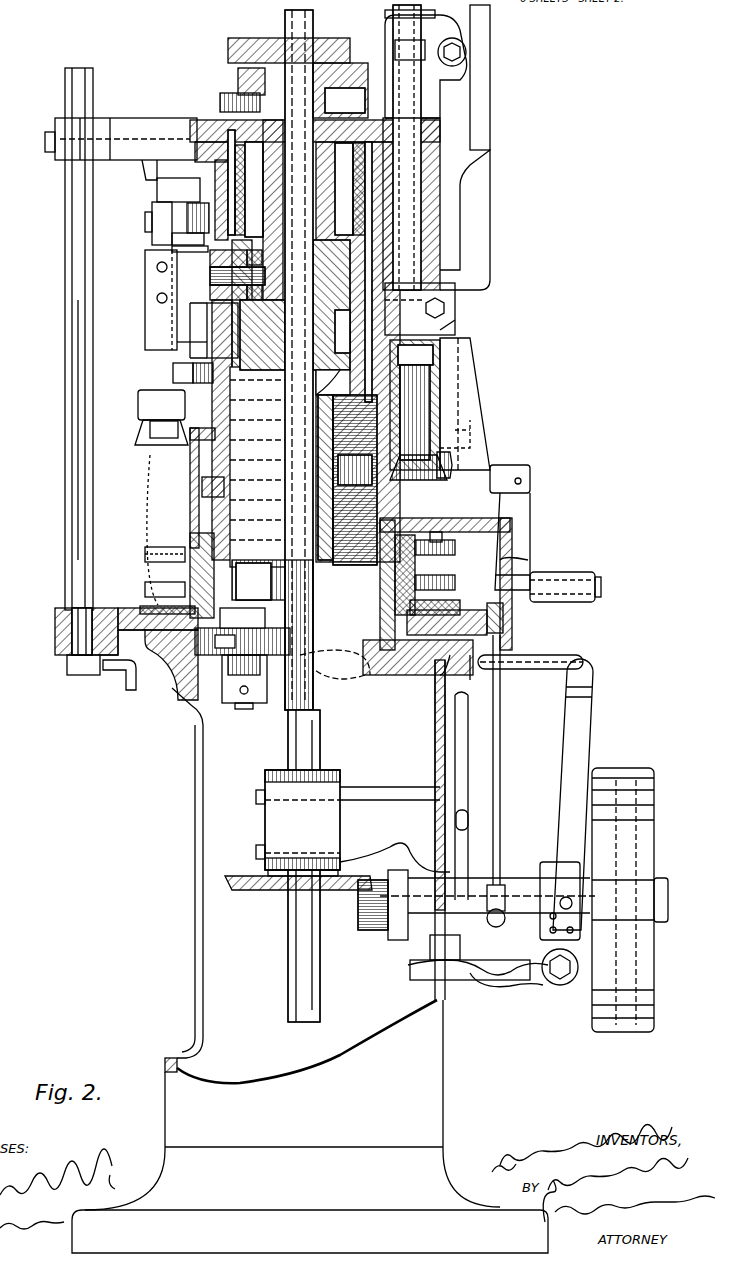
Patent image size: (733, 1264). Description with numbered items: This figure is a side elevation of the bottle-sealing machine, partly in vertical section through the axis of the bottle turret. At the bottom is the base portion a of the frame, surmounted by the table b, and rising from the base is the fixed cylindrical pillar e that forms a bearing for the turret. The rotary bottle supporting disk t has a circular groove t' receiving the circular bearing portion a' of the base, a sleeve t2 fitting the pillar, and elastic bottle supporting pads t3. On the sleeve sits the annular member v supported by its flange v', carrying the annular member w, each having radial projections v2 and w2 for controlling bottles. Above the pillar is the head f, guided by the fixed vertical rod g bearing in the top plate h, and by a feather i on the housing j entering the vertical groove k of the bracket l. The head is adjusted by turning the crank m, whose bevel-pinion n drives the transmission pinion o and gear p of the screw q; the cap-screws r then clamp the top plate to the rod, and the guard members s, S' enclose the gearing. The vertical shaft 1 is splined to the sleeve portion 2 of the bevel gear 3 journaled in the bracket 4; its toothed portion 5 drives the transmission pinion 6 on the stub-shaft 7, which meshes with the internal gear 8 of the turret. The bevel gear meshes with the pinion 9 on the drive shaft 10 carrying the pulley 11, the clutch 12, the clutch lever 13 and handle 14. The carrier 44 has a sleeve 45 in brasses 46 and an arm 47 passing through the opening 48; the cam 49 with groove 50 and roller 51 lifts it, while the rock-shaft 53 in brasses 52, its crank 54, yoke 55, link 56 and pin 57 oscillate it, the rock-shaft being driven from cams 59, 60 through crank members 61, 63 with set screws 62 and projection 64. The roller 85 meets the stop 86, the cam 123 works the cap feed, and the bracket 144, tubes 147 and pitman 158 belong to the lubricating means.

The base portion of the frame a is at (310, 956).
The cap-screws r is at (58, 150).
The fixed vertical rod g is at (96, 430).
The top-plate h is at (143, 124).
The stop 86 is at (157, 190).
The roller 85 is at (152, 232).
The yoke 55 is at (208, 220).
The two-armed link 56 is at (178, 248).
The carrier 44 is at (148, 300).
The arm 47 is at (214, 330).
The opening 48 is at (177, 345).
The sleeve 45 is at (468, 260).
The pivoting pin 57 is at (193, 372).
The guard member S' is at (160, 530).
The gear p is at (202, 490).
The guard member s is at (195, 510).
The radial projections w2 is at (160, 560).
The radial projections v2 is at (145, 550).
The elastic bottle supporting pads t3 is at (145, 606).
The table b is at (55, 628).
The cam 49 is at (262, 380).
The roller 51 is at (262, 335).
The screw q is at (253, 562).
The flange v' is at (353, 489).
The annular member v is at (374, 574).
The annular member w is at (392, 588).
The sleeve t2 is at (395, 596).
The pillar e is at (390, 617).
The rotary bottle supporting disk t is at (443, 575).
The circular groove t' is at (465, 596).
The bevel-pinion n is at (438, 542).
The brasses 52 is at (462, 145).
The cylindrical brasses 46 is at (421, 215).
The rock-shaft 53 is at (420, 193).
The bracket 144 is at (490, 108).
The crank member 61 is at (426, 66).
The crank member 63 is at (410, 28).
The projection 64 is at (466, 38).
The set screws 62 is at (460, 52).
The crank 54 is at (455, 290).
The peripheral groove 50 is at (455, 320).
The head f is at (440, 335).
The housing j is at (433, 362).
The feather i is at (450, 405).
The vertical groove k is at (490, 433).
The bracket l is at (485, 455).
The transmission pinion o is at (521, 486).
The crank m is at (520, 512).
The toothed portion 5 is at (313, 698).
The vertical shaft 1 is at (320, 735).
The sleeve portion 2 is at (338, 775).
The bracket 4 is at (352, 835).
The bevel gear 3 is at (265, 890).
The pinion 9 is at (368, 930).
The clutch 12 is at (555, 858).
The internal gear 8 is at (400, 678).
The circular bearing portion a' is at (480, 680).
The transmission pinion 6 is at (228, 645).
The stub-shaft 7 is at (245, 710).
The operating handle 14 is at (530, 655).
The clutch lever 13 is at (562, 792).
The tubes 147 is at (468, 757).
The pitman 158 is at (500, 763).
The pulley 11 is at (648, 858).
The drive shaft 10 is at (666, 900).
The cam 60 is at (262, 42).
The cam 59 is at (238, 77).
The cam 123 is at (222, 95).